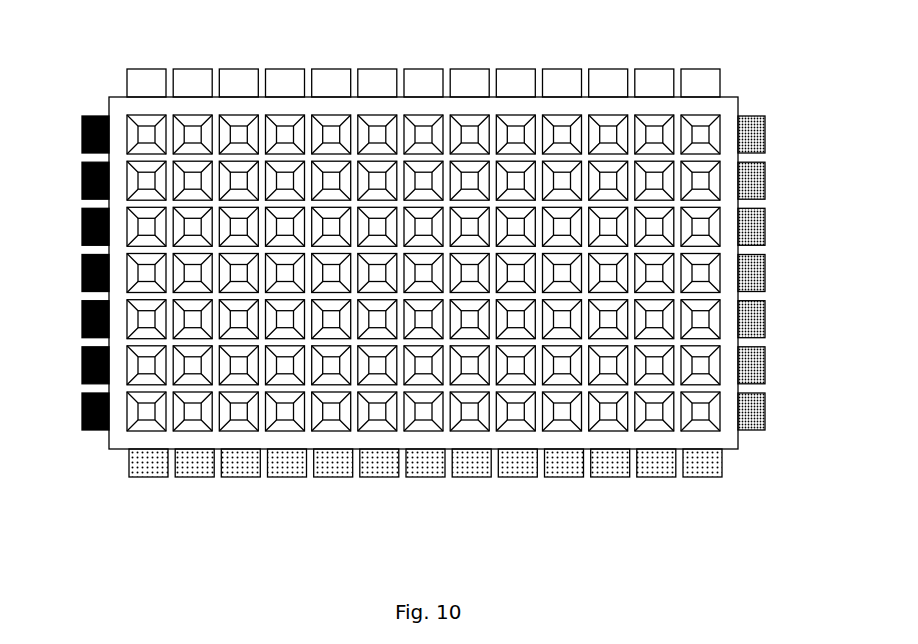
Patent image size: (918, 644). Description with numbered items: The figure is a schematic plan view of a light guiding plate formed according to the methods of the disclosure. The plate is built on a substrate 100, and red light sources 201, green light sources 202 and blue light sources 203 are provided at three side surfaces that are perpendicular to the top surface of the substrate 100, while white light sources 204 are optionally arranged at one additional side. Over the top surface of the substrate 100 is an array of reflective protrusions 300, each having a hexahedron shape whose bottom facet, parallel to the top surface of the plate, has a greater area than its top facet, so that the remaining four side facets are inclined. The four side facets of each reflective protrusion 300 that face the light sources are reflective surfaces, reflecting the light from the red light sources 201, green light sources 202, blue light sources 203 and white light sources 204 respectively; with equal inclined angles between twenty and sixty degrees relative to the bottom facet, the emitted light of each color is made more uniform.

The substrate 100 is at (738, 97).
The red light sources 201 is at (765, 133).
The green light sources 202 is at (378, 478).
The blue light sources 203 is at (87, 118).
The white light sources 204 is at (556, 68).
The reflective protrusion 300 is at (719, 428).